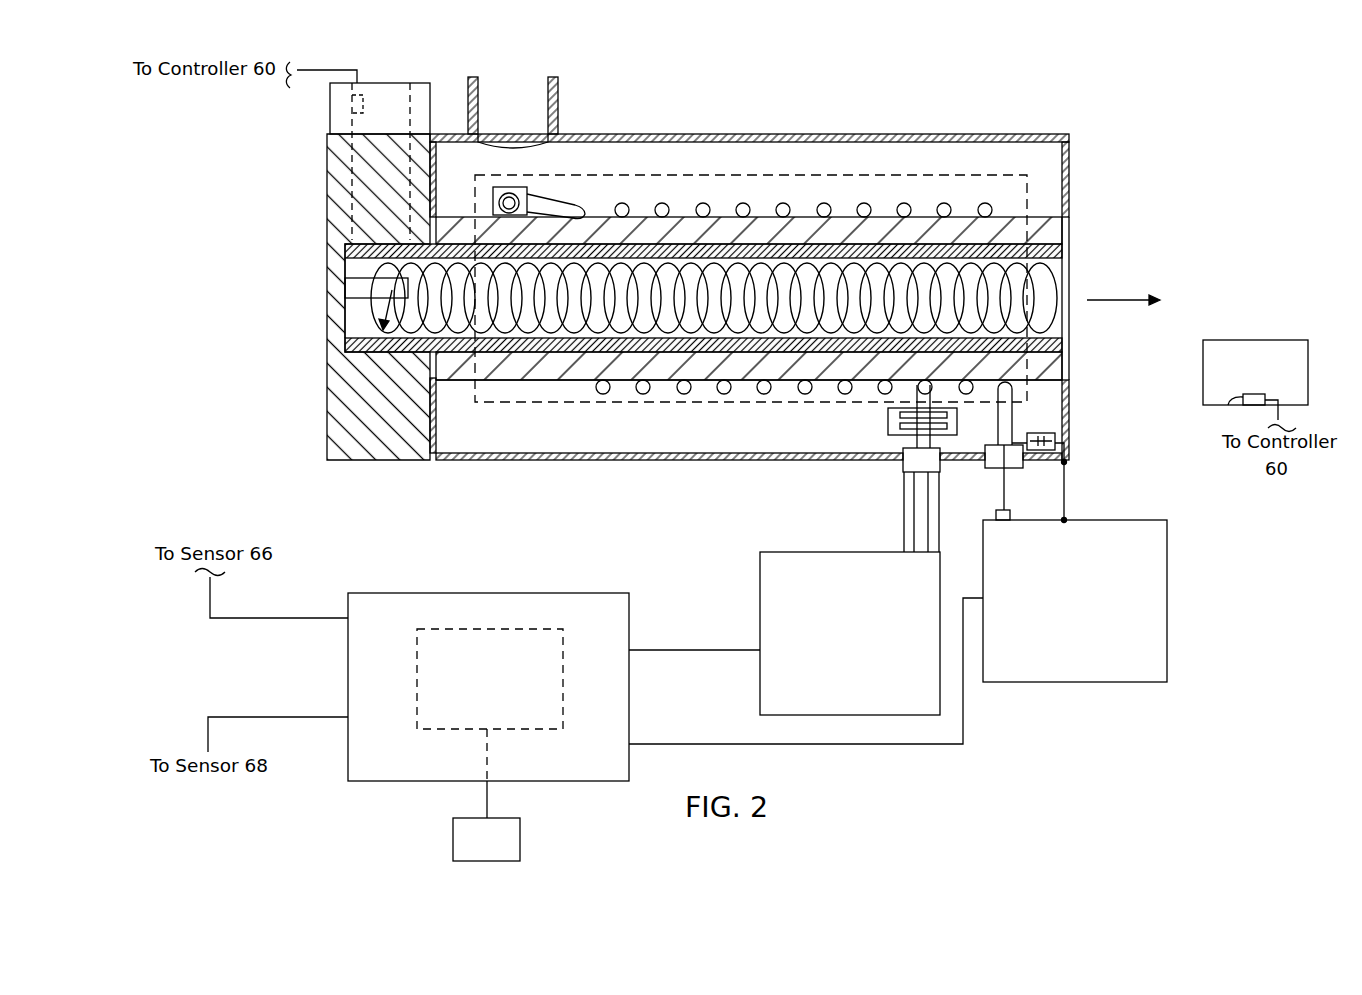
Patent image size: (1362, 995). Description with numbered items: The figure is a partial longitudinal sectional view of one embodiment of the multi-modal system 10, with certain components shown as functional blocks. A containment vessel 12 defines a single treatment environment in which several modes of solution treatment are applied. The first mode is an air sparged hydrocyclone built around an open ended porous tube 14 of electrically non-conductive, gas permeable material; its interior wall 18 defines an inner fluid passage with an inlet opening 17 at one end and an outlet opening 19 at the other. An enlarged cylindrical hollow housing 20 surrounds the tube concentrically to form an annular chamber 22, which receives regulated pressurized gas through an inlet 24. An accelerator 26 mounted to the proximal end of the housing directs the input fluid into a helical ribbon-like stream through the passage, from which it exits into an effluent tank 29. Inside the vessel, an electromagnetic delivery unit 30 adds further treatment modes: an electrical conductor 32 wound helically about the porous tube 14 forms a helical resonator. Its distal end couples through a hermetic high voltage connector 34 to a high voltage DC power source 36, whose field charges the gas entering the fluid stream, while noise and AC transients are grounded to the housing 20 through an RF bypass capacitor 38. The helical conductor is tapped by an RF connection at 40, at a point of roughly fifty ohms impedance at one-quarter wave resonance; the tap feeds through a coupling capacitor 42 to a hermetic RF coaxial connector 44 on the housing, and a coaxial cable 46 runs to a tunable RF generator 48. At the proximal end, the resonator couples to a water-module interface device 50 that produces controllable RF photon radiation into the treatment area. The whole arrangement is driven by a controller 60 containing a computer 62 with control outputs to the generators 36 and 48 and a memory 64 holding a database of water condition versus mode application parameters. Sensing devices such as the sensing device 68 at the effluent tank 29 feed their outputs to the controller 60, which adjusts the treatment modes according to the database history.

The multi-modal system 10 is at (966, 116).
The containment vessel 12 is at (1069, 180).
The porous tube 14 is at (1069, 237).
The inlet opening 17 is at (425, 83).
The interior wall 18 is at (1052, 250).
The outlet opening 19 is at (1069, 331).
The housing 20 is at (688, 462).
The annular chamber 22 is at (553, 455).
The inlet 24 is at (548, 93).
The accelerator 26 is at (327, 190).
The effluent tank 29 is at (1263, 340).
The electromagnetic delivery unit 30 is at (713, 174).
The electrical conductor 32 is at (826, 204).
The hermetic high voltage connector 34 is at (1023, 465).
The high voltage DC power source 36 is at (1167, 590).
The RF bypass capacitor 38 is at (1045, 428).
The RF connection 40 is at (890, 398).
The capacitor 42 is at (888, 433).
The hermetic RF coaxial connector 44 is at (903, 468).
The coaxial cable 46 is at (904, 531).
The RF generator 48 is at (760, 580).
The water-module interface device 50 is at (493, 195).
The controller 60 is at (500, 593).
The computer 62 is at (563, 655).
The memory 64 is at (520, 840).
The sensing device 68 is at (1232, 400).